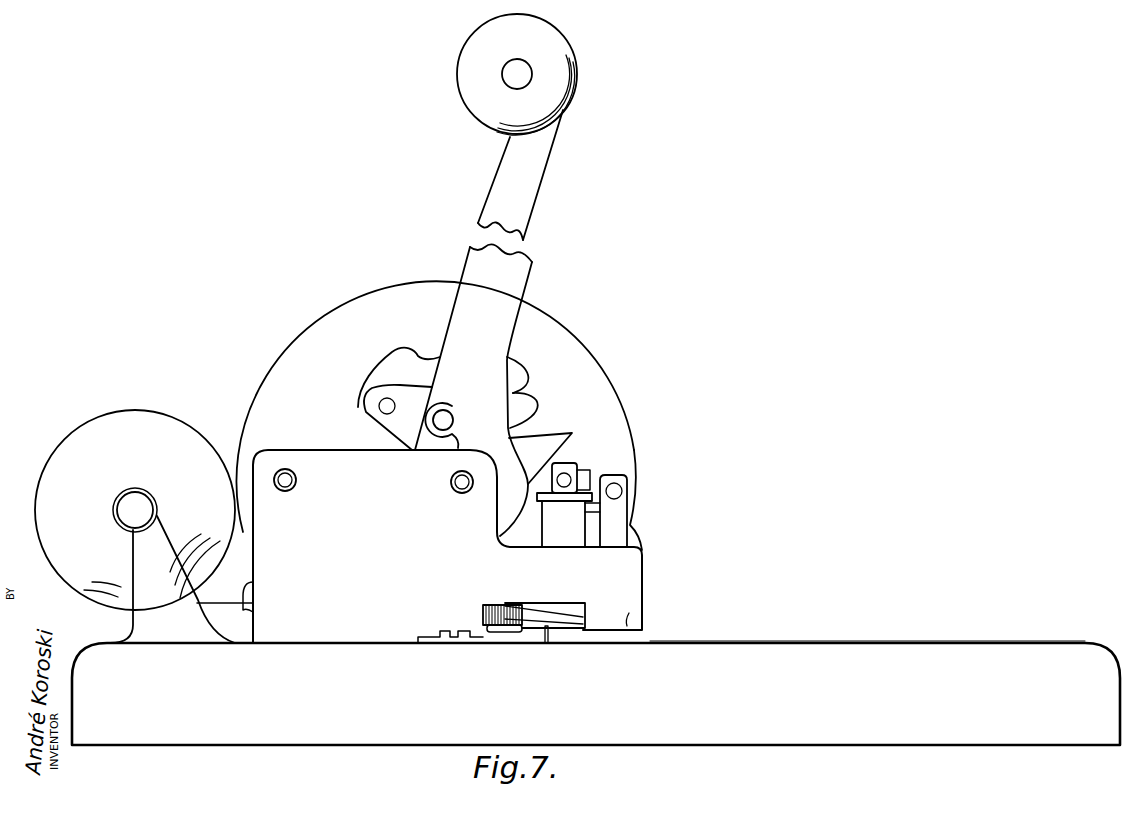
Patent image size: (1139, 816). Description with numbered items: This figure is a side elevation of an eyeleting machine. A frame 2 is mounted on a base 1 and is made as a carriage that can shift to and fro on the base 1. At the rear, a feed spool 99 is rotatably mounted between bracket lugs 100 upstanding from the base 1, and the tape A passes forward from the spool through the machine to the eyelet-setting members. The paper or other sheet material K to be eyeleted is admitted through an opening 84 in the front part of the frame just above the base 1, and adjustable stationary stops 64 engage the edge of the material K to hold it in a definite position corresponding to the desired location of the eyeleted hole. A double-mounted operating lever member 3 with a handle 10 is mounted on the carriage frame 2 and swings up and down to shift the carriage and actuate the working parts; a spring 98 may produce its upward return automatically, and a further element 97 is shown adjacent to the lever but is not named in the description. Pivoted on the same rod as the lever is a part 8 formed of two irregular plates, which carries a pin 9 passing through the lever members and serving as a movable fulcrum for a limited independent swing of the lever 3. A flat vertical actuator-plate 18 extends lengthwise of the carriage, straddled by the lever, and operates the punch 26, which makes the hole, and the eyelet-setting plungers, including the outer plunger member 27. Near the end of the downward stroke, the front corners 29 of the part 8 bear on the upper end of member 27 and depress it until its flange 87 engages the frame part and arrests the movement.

The base 1 is at (846, 660).
The frame 2 is at (610, 567).
The operating lever member 3 is at (534, 161).
The part 8 is at (405, 395).
The rod or pin 9 is at (447, 417).
The handle 10 is at (550, 71).
The actuator-plate 18 is at (563, 337).
The punch 26 is at (620, 480).
The outer telescoping plunger member 27 is at (575, 518).
The front corners 29 is at (533, 407).
The adjustable stationary stops 64 is at (540, 643).
The opening 84 is at (628, 637).
The flange 87 is at (583, 493).
The pawl arm 97 is at (520, 438).
The spring 98 is at (508, 392).
The feed spool 99 is at (178, 435).
The bracket lugs 100 is at (148, 625).
The tape A is at (228, 606).
The sheet material K is at (717, 643).